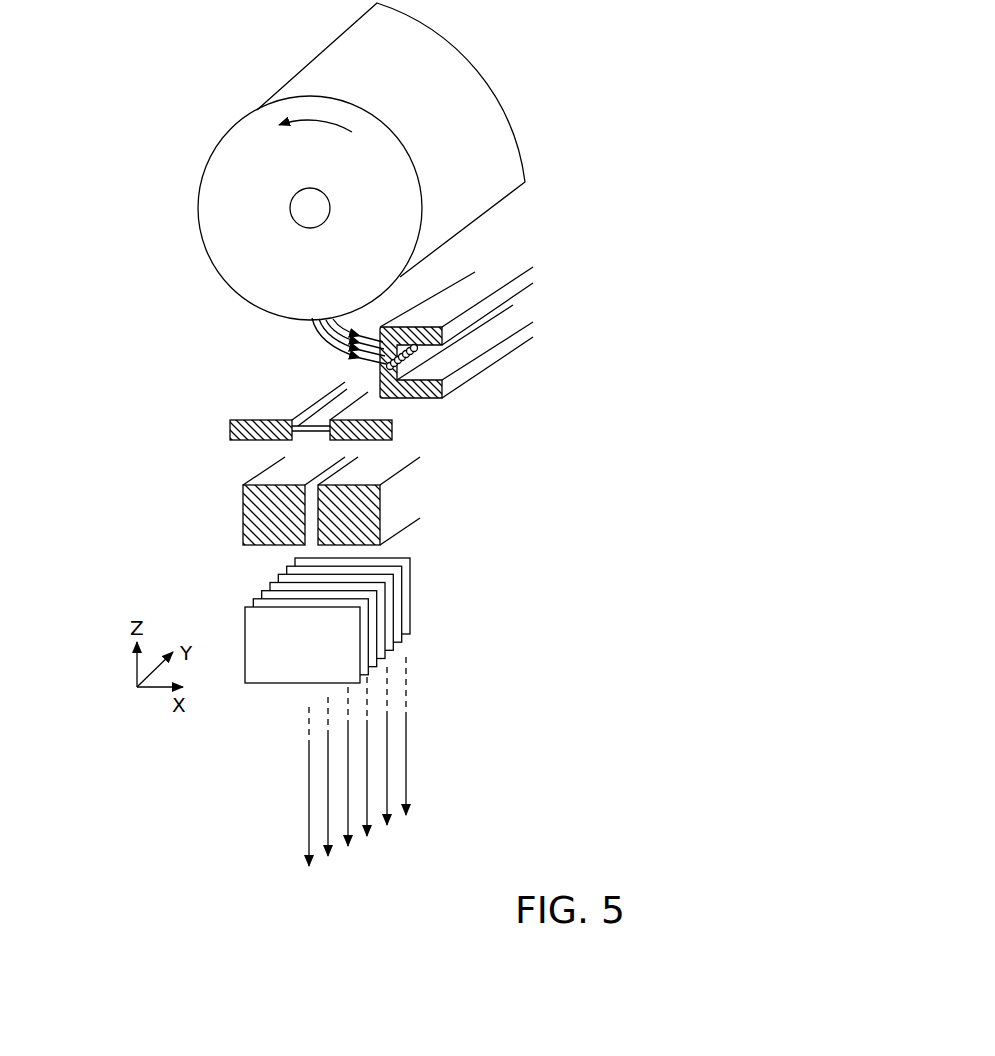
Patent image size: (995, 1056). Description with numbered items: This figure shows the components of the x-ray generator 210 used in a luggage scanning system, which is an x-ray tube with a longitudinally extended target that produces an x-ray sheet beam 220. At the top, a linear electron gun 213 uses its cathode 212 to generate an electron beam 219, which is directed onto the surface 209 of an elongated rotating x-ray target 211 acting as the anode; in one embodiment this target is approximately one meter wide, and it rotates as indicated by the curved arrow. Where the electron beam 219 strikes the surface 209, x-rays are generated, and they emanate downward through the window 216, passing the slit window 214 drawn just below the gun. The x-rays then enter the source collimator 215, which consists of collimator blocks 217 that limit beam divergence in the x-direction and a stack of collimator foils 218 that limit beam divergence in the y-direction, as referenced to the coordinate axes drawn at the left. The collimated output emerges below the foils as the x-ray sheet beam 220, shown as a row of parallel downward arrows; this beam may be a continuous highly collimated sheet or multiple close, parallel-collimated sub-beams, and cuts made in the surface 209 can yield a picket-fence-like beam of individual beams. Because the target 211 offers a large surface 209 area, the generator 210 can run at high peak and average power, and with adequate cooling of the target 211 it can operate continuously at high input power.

The surface 209 is at (482, 174).
The x-ray generator 210 is at (190, 43).
The rotating x-ray target 211 is at (208, 218).
The cathode 212 is at (416, 350).
The linear electron gun 213 is at (497, 373).
The slit window 214 is at (407, 430).
The source collimator 215 is at (777, 500).
The window 216 is at (288, 449).
The collimator blocks 217 is at (430, 498).
The collimator foils 218 is at (430, 598).
The electron beam 219 is at (283, 338).
The x-ray sheet beam 220 is at (442, 718).